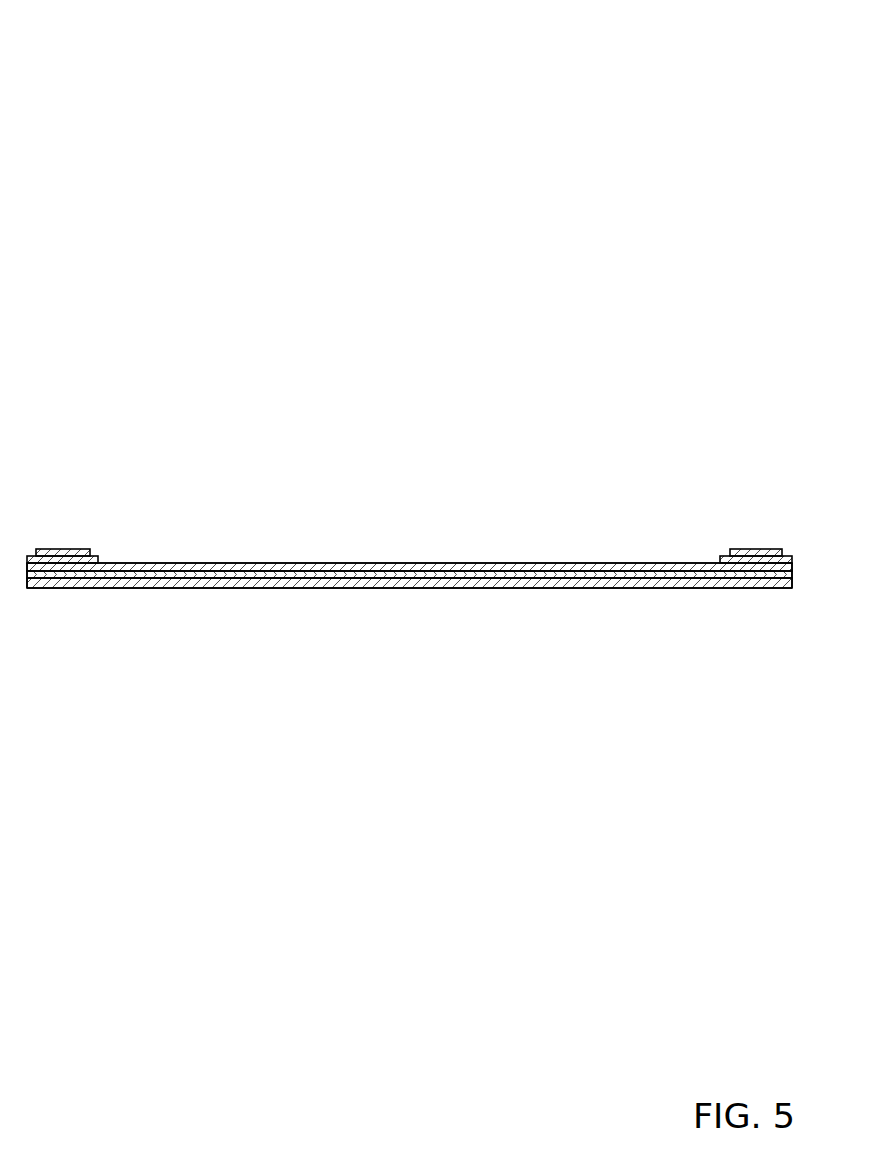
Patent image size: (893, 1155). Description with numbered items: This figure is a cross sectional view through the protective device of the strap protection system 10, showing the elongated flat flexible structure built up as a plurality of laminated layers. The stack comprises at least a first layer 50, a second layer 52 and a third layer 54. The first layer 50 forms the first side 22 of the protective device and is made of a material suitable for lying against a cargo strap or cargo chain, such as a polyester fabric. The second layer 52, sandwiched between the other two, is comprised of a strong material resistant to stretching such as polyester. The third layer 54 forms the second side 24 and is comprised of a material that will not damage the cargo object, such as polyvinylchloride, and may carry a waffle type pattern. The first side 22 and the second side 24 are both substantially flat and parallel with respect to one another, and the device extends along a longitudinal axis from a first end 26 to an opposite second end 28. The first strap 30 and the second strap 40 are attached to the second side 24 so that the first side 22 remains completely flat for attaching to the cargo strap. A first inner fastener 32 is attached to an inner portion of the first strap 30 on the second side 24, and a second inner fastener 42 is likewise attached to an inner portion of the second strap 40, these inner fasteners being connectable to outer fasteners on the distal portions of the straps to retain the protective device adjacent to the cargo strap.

The strap protection system 10 is at (136, 122).
The first side 22 is at (313, 588).
The second side 24 is at (383, 563).
The first end 26 is at (27, 580).
The second end 28 is at (792, 575).
The first strap 30 is at (100, 563).
The first inner fastener 32 is at (62, 549).
The second strap 40 is at (720, 562).
The second inner fastener 42 is at (752, 549).
The first layer 50 is at (511, 583).
The second layer 52 is at (629, 572).
The third layer 54 is at (522, 565).